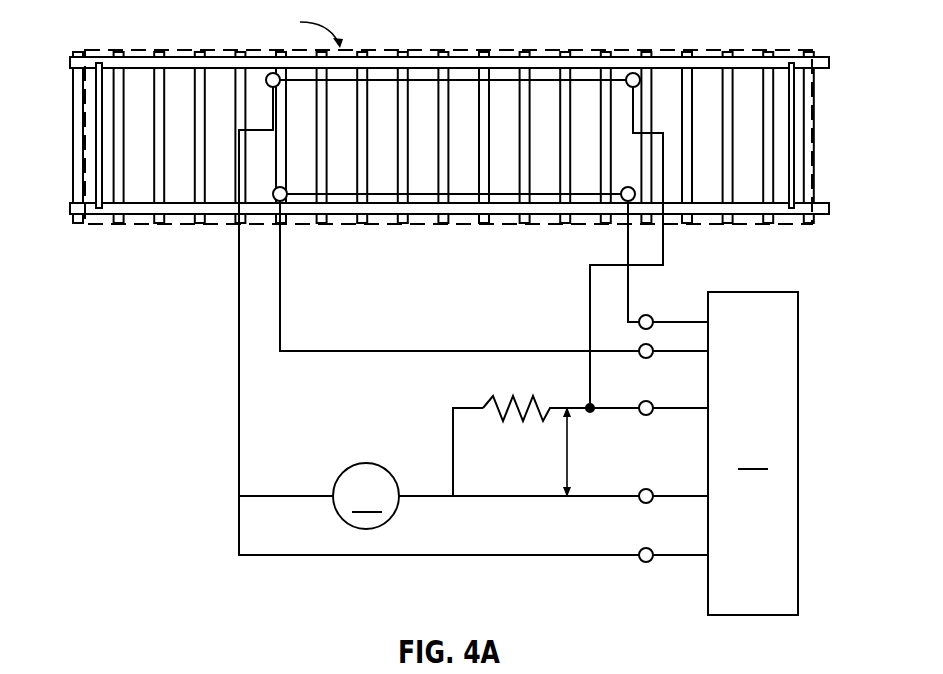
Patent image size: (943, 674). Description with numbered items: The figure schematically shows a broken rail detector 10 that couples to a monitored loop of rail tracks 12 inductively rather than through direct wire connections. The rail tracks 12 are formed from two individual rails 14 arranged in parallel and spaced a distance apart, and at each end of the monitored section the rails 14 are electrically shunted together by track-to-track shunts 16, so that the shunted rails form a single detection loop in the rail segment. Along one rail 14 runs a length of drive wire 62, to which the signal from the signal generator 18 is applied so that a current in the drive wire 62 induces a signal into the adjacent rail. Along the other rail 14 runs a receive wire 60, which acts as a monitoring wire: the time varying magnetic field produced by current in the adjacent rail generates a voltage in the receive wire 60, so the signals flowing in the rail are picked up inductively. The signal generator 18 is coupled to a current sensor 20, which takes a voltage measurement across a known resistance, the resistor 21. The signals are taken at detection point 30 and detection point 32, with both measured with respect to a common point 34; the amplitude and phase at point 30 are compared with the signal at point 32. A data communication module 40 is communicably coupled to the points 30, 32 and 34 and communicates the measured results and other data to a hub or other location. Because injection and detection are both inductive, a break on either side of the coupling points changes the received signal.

The detector 10 is at (770, 453).
The rail tracks 12 is at (443, 142).
The rails 14 is at (73, 72).
The track-to-track shunts 16 is at (99, 208).
The signal generator 18 is at (366, 496).
The current sensor 20 is at (566, 455).
The resistor 21 is at (496, 400).
The detection point 30 is at (649, 400).
The detection point 32 is at (650, 489).
The common point 34 is at (650, 548).
The data communication module 40 is at (753, 453).
The receive wire 60 is at (447, 198).
The drive wire 62 is at (436, 78).